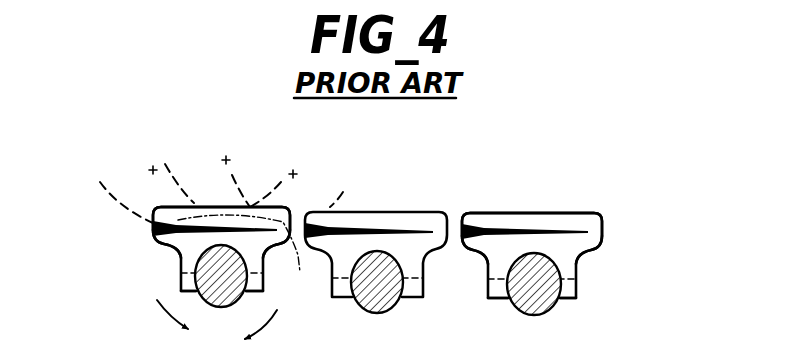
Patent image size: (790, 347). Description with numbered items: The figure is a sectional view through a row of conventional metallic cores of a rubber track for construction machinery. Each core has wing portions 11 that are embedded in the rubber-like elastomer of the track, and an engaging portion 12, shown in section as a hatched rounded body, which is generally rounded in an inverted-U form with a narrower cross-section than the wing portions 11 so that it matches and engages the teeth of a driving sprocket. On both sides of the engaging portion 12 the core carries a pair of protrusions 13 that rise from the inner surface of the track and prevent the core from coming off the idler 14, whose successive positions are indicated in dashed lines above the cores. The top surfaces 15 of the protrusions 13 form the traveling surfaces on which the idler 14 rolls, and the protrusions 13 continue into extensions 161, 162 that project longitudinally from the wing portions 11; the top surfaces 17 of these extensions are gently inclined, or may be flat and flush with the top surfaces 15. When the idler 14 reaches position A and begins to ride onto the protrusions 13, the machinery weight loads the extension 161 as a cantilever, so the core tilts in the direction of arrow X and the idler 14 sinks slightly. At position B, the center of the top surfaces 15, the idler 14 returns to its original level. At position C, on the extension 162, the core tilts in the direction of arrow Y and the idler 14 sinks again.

The wing portions 11 is at (574, 303).
The engaging portion 12 is at (555, 264).
The protrusions 13 is at (492, 204).
The idler 14 is at (100, 188).
The top surfaces of the protrusions 15 is at (217, 206).
The extension 161 is at (160, 246).
The extension 162 is at (297, 250).
The top surfaces of the extensions 17 is at (153, 228).
The position A is at (153, 170).
The position B is at (226, 160).
The position C is at (297, 173).
The arrow X is at (168, 323).
The arrow Y is at (262, 328).